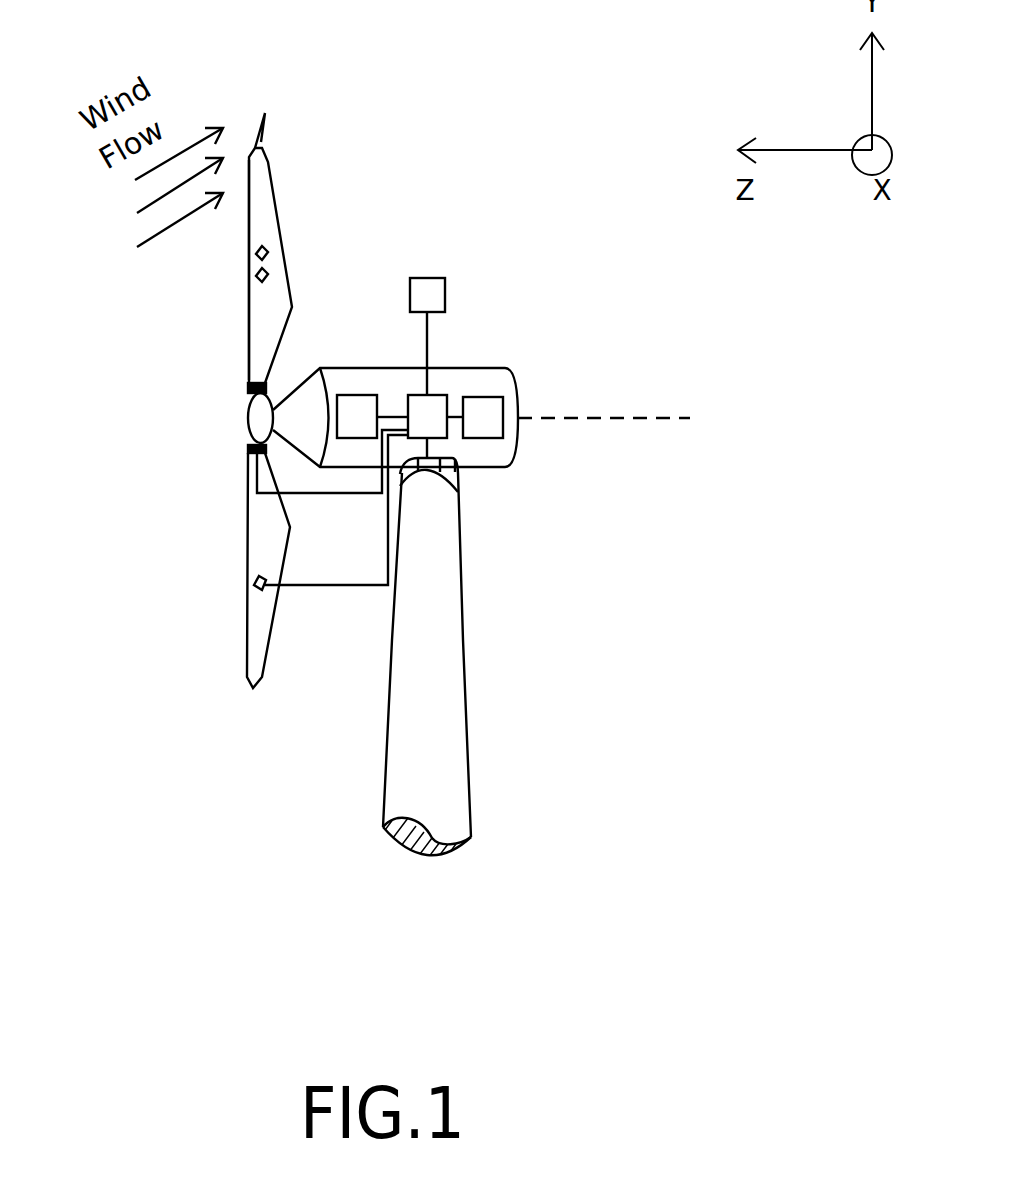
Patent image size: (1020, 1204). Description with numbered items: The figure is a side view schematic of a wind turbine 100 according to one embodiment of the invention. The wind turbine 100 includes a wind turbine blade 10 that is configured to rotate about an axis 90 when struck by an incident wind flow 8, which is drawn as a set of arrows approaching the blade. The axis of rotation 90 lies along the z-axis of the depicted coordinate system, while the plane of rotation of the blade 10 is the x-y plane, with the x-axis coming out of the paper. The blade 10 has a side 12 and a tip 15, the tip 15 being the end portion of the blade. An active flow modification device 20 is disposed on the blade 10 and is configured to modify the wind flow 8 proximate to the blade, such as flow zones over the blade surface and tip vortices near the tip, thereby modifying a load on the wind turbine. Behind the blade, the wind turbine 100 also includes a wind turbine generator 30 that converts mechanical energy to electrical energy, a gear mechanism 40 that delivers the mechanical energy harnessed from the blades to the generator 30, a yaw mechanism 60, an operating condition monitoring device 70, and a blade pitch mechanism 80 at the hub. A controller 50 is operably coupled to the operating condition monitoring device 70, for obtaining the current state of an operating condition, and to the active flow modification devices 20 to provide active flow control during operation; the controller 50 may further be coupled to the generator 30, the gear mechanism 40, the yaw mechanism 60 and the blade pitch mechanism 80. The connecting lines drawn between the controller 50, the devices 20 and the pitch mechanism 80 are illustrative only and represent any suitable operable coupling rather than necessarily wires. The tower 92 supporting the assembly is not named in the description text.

The wind flow 8 is at (150, 198).
The wind turbine blade 10 is at (320, 418).
The side 12 is at (317, 265).
The tip 15 is at (256, 105).
The active flow modification device 20 is at (254, 281).
The wind turbine generator 30 is at (538, 392).
The gear mechanism 40 is at (350, 353).
The controller 50 is at (482, 482).
The yaw mechanism 60 is at (482, 531).
The operating condition monitoring device 70 is at (449, 290).
The blade pitch mechanism 80 is at (218, 425).
The axis 90 is at (630, 419).
The tower 92 is at (478, 678).
The wind turbine 100 is at (710, 805).